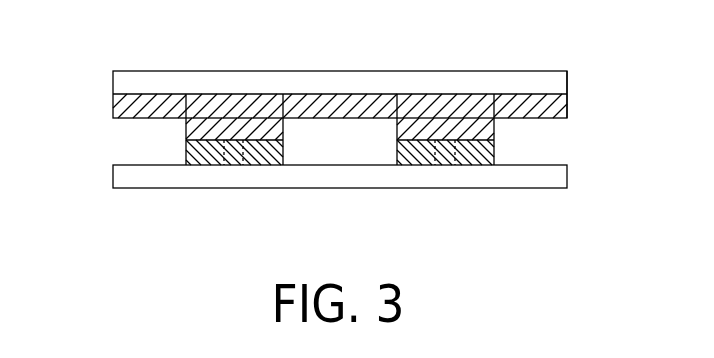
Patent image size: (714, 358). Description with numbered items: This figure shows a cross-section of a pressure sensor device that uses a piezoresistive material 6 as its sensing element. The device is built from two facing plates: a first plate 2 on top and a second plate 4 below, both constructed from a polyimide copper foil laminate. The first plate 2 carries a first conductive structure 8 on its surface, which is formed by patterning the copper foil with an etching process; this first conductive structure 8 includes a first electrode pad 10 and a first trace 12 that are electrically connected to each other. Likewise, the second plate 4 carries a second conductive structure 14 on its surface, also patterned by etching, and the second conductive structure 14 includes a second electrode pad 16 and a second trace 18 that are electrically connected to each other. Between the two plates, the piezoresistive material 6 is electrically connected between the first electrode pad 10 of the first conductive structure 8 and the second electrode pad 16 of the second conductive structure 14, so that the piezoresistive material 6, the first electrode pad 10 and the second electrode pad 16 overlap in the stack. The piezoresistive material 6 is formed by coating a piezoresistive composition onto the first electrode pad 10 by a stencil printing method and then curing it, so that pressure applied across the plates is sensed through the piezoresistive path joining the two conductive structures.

The first plate 2 is at (86, 113).
The second plate 4 is at (86, 183).
The piezoresistive material 6 is at (237, 133).
The first conductive structure 8 is at (567, 107).
The first electrode pad 10 is at (457, 105).
The first trace 12 is at (337, 100).
The second conductive structure 14 is at (480, 163).
The second electrode pad 16 is at (275, 158).
The second trace 18 is at (235, 158).